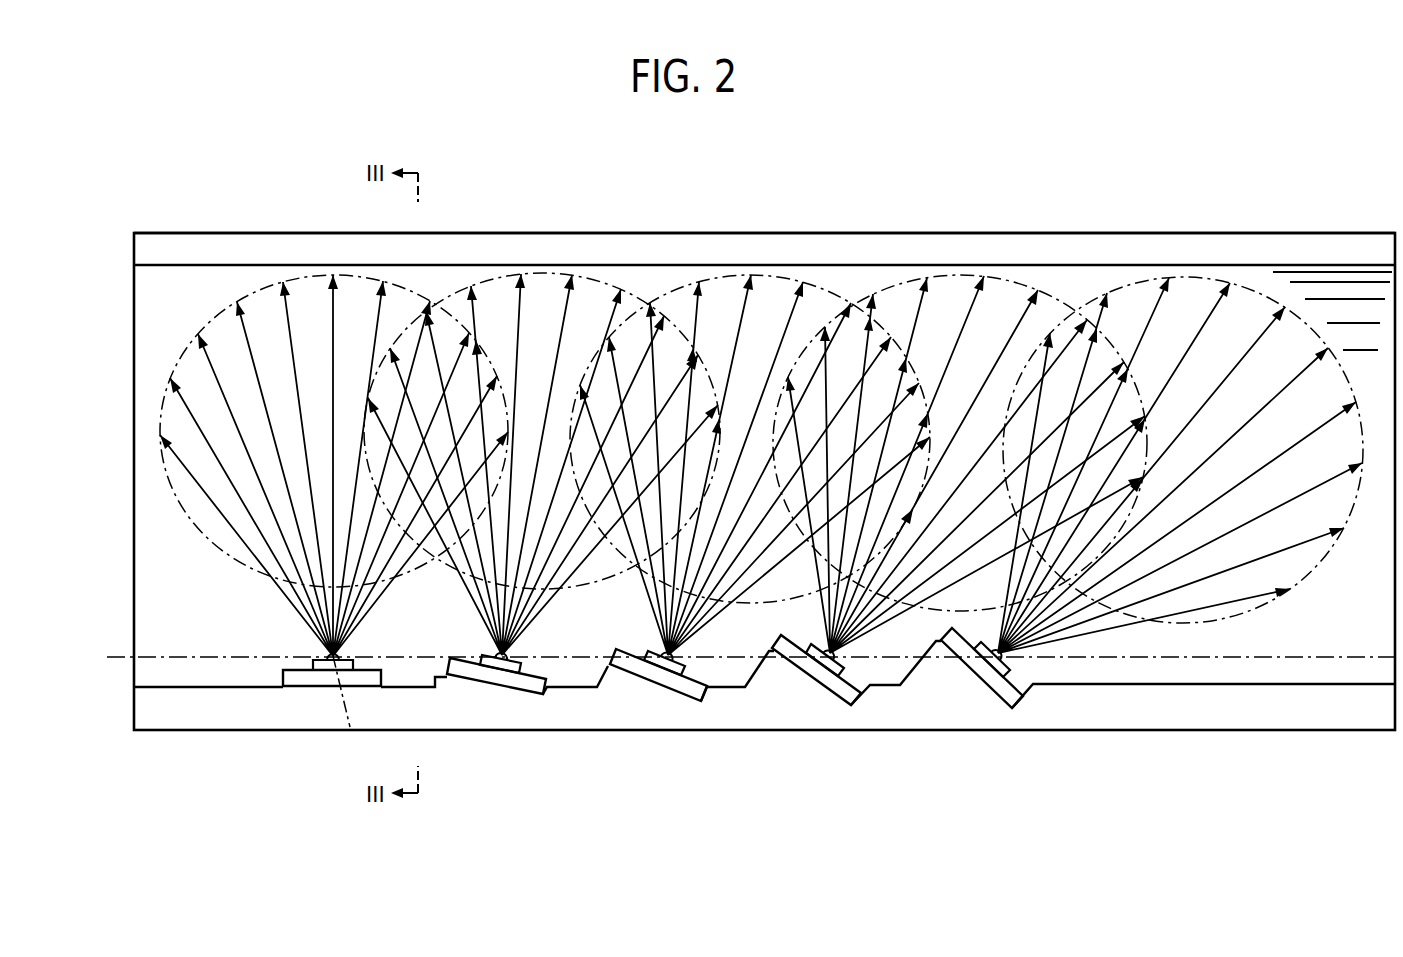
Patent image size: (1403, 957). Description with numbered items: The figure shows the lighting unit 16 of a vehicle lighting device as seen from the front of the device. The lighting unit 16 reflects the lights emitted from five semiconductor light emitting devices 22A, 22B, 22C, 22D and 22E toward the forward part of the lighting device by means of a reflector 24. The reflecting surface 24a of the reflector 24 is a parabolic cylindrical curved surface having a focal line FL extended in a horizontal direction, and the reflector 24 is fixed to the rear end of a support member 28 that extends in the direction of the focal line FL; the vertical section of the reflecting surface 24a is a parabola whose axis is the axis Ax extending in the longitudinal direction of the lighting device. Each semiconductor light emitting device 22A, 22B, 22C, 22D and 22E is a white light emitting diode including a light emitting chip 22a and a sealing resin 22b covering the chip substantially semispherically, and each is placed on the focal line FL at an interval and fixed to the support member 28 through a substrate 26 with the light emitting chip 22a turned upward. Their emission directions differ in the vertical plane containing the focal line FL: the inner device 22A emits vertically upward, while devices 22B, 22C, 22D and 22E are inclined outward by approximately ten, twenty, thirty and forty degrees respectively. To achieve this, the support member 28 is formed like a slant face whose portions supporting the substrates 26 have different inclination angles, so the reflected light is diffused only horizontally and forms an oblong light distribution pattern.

The lighting unit 16 is at (1126, 174).
The reflector 24 is at (905, 233).
The reflecting surface 24a is at (721, 291).
The semiconductor light emitting device 22A is at (298, 526).
The semiconductor light emitting device 22B is at (530, 663).
The semiconductor light emitting device 22C is at (697, 665).
The semiconductor light emitting device 22D is at (857, 665).
The semiconductor light emitting device 22E is at (1022, 663).
The light emitting chip 22a is at (330, 668).
The sealing resin 22b is at (338, 651).
The substrate 26 is at (287, 677).
The support member 28 is at (1215, 705).
The axis Ax is at (318, 652).
The focal line FL is at (1265, 657).